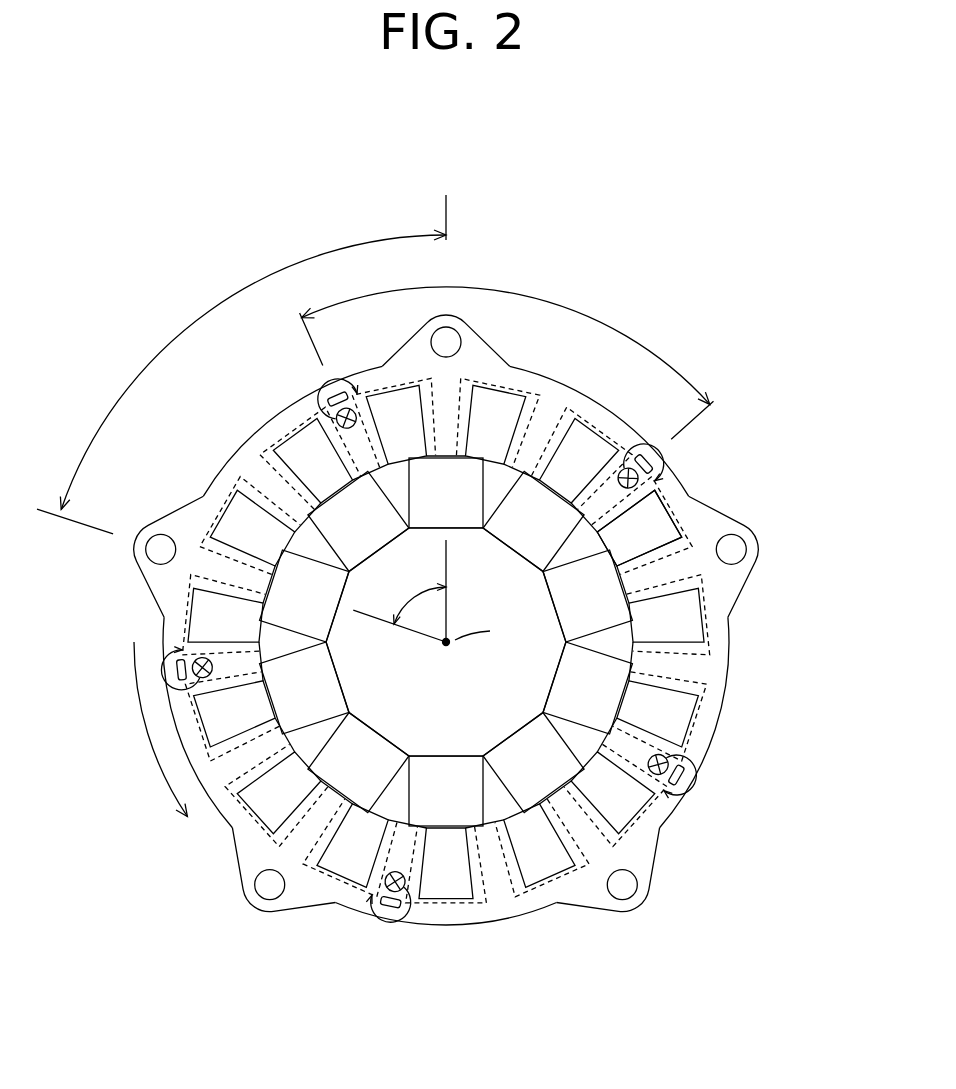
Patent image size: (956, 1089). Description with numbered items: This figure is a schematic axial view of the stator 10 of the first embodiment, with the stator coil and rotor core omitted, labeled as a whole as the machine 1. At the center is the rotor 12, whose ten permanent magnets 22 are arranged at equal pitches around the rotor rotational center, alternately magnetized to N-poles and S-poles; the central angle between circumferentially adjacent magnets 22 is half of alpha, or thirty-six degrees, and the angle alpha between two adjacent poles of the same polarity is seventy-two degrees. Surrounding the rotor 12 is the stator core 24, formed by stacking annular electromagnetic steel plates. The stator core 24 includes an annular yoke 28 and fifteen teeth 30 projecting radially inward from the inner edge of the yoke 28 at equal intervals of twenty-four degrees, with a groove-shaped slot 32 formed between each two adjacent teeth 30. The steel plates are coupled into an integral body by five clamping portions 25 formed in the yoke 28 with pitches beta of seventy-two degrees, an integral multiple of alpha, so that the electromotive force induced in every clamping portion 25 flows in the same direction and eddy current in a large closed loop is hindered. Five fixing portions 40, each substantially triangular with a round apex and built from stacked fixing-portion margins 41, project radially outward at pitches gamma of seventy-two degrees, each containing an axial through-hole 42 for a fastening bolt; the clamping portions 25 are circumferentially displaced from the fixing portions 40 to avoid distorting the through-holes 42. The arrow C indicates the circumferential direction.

The motor 1 is at (676, 332).
The stator 10 is at (713, 462).
The rotor 12 is at (620, 547).
The permanent magnet 22 is at (465, 528).
The stator core 24 is at (729, 692).
The clamping portion 25 is at (318, 410).
The yoke 28 is at (265, 435).
The tooth 30 is at (298, 448).
The slot 32 is at (293, 458).
The fixing portion 40 is at (470, 318).
The fixing-portion margin 41 is at (739, 588).
The through-hole 42 is at (450, 352).